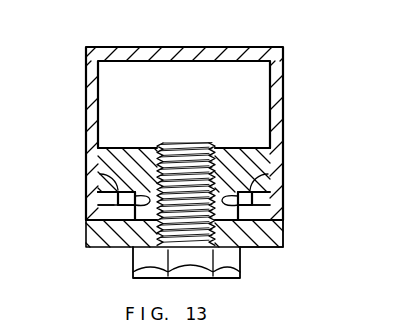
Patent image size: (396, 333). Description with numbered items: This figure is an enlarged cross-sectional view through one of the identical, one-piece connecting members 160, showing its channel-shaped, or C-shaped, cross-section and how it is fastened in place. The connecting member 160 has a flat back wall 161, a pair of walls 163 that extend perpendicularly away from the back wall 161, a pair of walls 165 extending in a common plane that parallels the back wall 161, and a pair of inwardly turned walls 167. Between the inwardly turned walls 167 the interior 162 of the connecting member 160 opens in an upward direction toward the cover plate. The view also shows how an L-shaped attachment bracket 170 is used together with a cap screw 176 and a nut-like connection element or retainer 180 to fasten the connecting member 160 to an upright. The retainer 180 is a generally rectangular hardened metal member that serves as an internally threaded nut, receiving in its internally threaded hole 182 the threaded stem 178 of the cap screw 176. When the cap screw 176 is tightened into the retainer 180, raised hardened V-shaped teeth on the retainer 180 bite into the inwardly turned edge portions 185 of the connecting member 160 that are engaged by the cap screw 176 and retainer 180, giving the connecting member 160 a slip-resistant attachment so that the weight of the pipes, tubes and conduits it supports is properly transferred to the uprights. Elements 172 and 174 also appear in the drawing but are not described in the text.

The connecting member 160 is at (300, 76).
The back wall 161 is at (176, 47).
The interior 162 is at (256, 115).
The wall 163 is at (92, 106).
The wall 165 is at (96, 219).
The inwardly turned wall 167 is at (117, 198).
The L-shaped attachment bracket 170 is at (262, 256).
The flange 172 is at (267, 250).
The mounting plate 174 is at (94, 236).
The cap screw 176 is at (140, 268).
The threaded stem 178 is at (262, 150).
The nut-like connection element 180 is at (150, 148).
The internally threaded hole 182 is at (166, 143).
The inwardly turned edge portion 185 is at (100, 186).